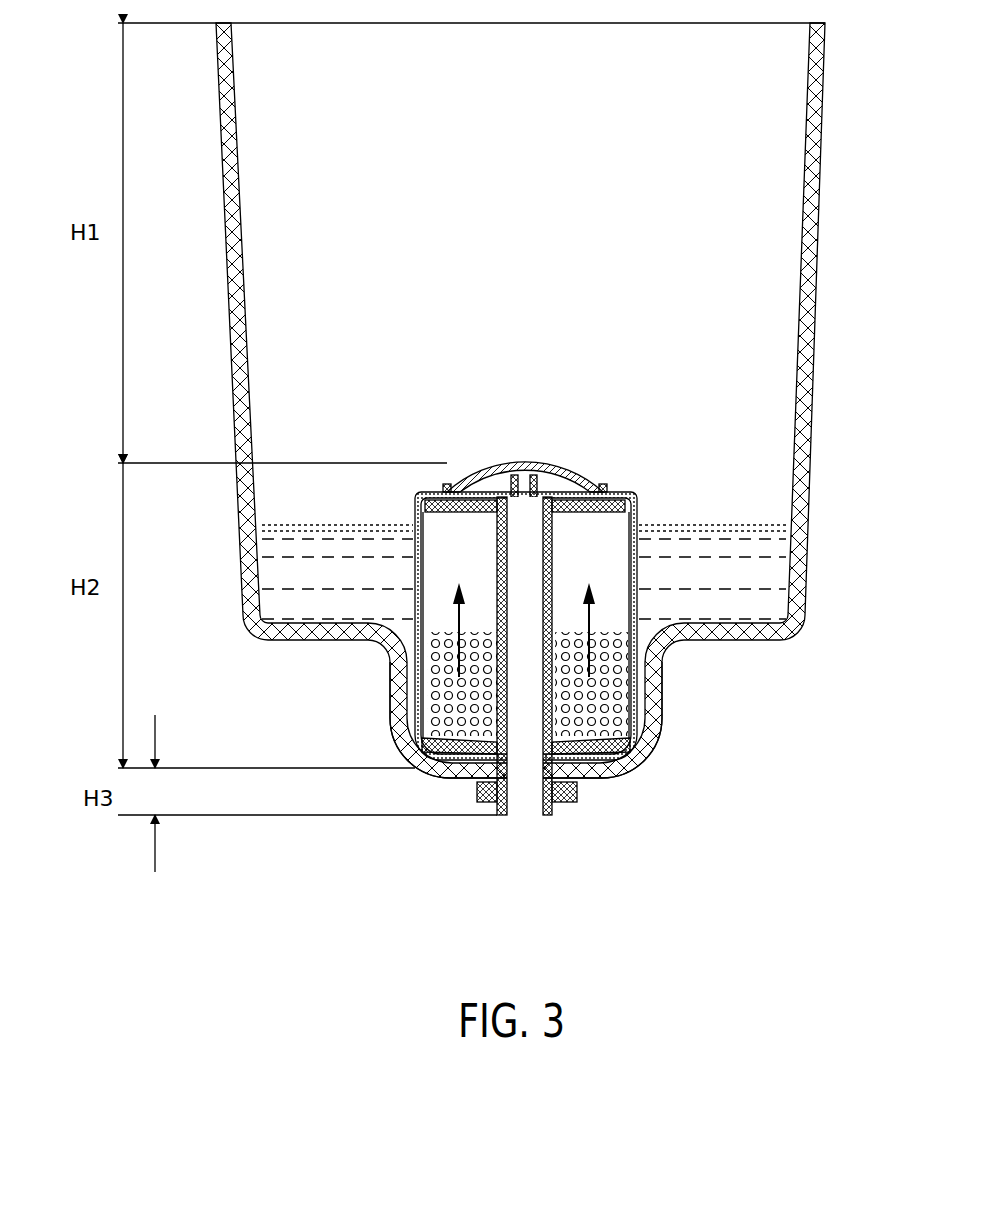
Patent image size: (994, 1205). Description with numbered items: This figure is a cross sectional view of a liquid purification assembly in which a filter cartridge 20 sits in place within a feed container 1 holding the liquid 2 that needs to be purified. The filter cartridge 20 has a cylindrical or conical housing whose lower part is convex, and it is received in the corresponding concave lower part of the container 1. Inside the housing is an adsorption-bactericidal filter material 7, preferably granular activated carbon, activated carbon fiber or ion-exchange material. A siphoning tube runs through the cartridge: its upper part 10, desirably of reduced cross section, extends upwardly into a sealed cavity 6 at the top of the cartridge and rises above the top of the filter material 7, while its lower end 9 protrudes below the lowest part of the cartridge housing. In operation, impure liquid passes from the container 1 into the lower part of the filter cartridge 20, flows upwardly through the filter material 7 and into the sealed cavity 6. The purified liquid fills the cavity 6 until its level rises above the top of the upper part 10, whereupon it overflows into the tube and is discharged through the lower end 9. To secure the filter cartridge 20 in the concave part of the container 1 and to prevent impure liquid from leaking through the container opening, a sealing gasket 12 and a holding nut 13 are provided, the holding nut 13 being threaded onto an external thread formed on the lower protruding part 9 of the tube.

The container 1 is at (780, 143).
The liquid 2 is at (762, 539).
The sealed cavity 6 is at (560, 480).
The adsorption-bactericidal filter material 7 is at (612, 527).
The lower end of the siphoning tube 9 is at (532, 808).
The upper part of the siphoning tube 10 is at (523, 463).
The gasket 12 is at (657, 743).
The holding nut 13 is at (577, 805).
The filter cartridge 20 is at (638, 635).